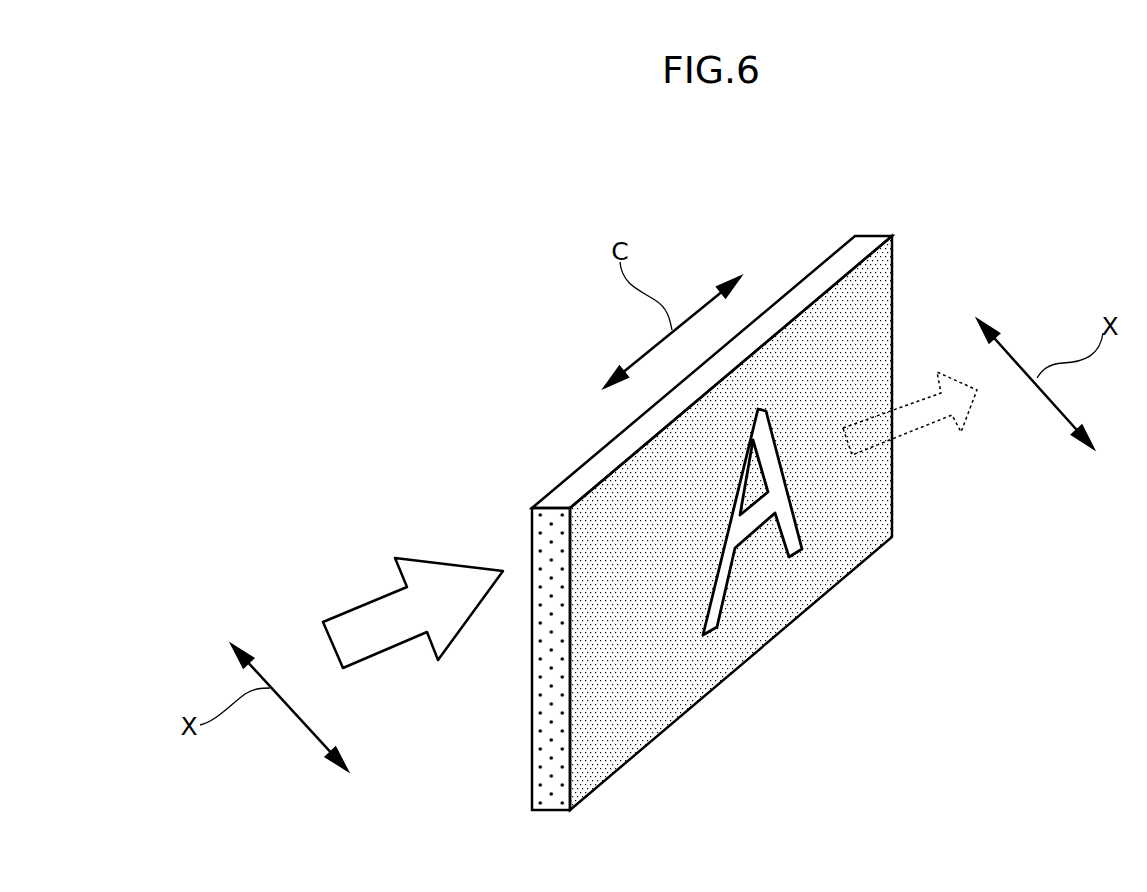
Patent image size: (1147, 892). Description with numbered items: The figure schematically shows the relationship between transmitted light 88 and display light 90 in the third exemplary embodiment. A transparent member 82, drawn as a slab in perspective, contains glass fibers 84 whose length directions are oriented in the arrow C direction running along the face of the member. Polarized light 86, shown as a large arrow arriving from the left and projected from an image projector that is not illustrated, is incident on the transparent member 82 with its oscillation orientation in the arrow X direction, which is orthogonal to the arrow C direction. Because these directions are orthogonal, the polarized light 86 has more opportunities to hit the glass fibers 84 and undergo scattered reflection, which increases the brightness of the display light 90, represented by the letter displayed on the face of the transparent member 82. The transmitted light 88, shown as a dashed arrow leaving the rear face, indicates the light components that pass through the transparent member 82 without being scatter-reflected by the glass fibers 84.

The transparent member 82 is at (712, 500).
The glass fibers 84 is at (640, 645).
The polarized light 86 is at (437, 562).
The transmitted light 88 is at (928, 425).
The display light 90 is at (777, 549).